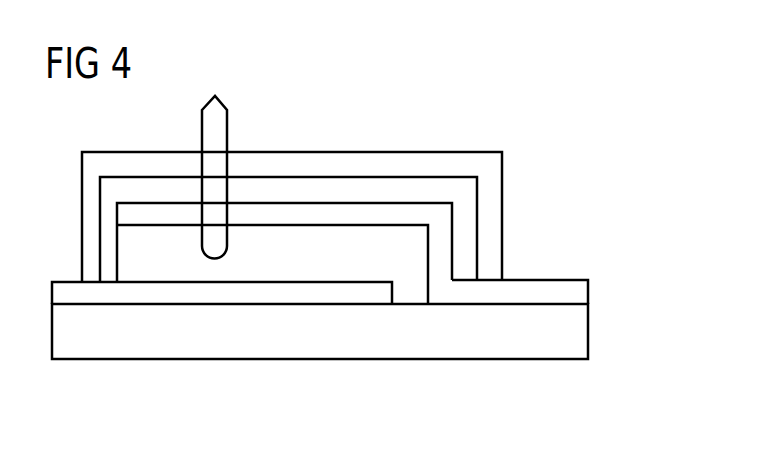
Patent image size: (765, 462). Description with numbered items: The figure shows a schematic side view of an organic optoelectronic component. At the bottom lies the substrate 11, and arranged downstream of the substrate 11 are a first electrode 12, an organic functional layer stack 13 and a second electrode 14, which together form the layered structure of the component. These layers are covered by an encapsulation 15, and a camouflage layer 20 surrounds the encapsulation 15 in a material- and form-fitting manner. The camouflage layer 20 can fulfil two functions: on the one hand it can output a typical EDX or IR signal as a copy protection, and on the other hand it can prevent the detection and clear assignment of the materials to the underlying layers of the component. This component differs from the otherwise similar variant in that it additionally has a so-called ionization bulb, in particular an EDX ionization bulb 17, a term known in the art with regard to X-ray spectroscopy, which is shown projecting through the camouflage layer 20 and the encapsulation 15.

The substrate 11 is at (578, 332).
The first electrode 12 is at (67, 290).
The organic functional layer stack 13 is at (422, 253).
The second electrode 14 is at (578, 293).
The encapsulation 15 is at (468, 215).
The EDX ionization bulb 17 is at (218, 134).
The camouflage layer 20 is at (493, 177).